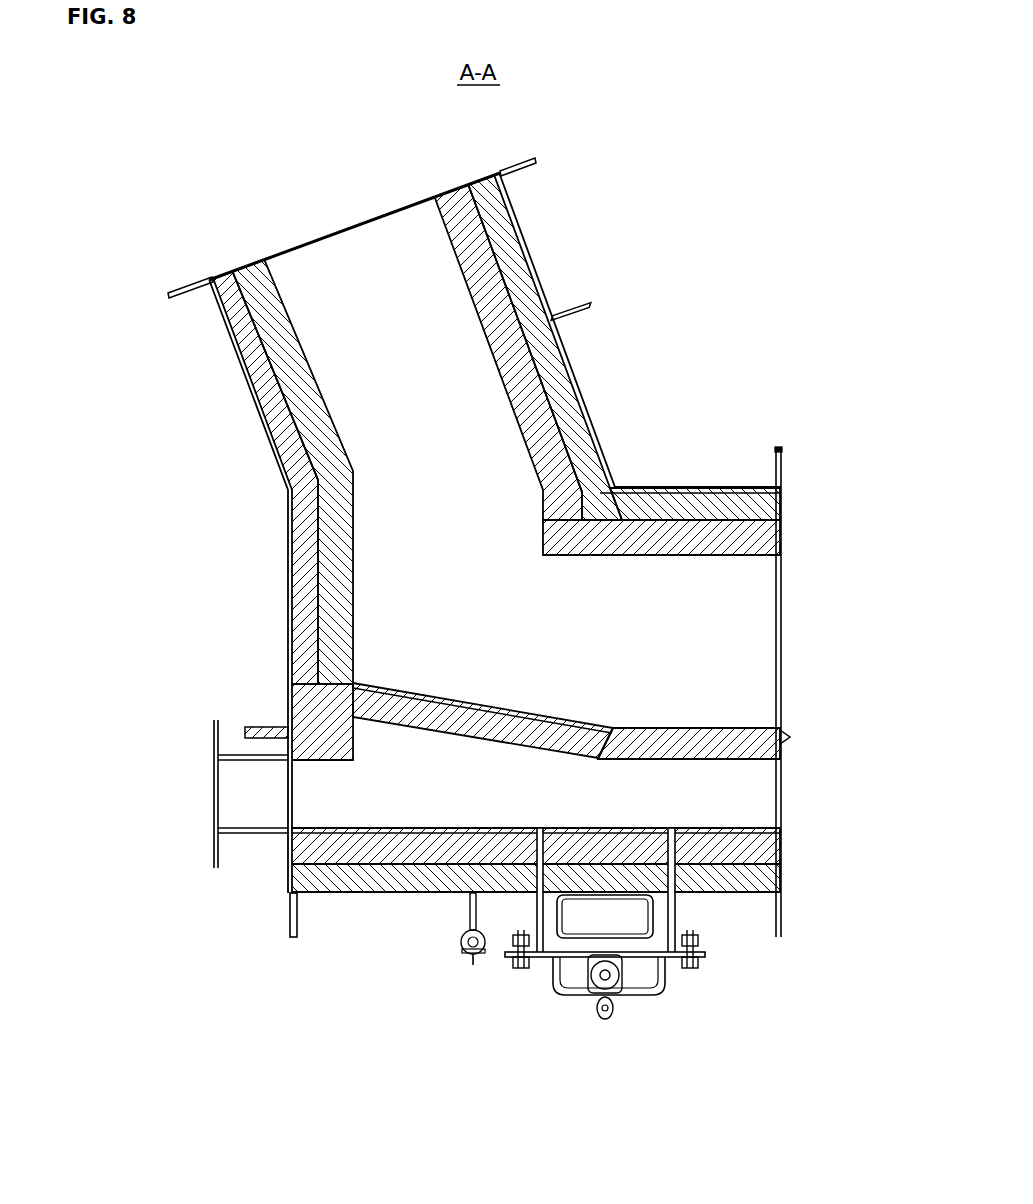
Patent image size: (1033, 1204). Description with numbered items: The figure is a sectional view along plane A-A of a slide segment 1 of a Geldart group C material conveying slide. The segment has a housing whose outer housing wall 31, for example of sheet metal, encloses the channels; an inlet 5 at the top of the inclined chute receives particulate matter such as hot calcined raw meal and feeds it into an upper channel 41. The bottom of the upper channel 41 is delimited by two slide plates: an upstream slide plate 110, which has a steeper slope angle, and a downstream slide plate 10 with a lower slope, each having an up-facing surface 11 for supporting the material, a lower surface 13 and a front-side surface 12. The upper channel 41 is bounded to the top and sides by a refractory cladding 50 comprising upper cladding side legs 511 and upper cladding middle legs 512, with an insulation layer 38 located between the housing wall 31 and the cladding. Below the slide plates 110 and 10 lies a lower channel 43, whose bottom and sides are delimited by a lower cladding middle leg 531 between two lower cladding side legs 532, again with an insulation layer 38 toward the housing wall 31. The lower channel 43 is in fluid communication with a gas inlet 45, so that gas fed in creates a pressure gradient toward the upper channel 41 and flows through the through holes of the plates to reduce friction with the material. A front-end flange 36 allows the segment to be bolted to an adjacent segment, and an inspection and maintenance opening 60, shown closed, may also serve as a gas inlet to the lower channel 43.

The slide segment 1 is at (688, 238).
The inlet 5 is at (340, 218).
The slide plate 10 is at (722, 743).
The up-facing surface 11 is at (477, 696).
The front-side surface 12 is at (788, 742).
The lower surface 13 is at (393, 728).
The housing wall 31 is at (250, 398).
The front-end flange 36 is at (778, 932).
The insulation layer 38 is at (512, 263).
The upper channel 41 is at (553, 627).
The lower channel 43 is at (565, 792).
The gas inlet 45 is at (218, 792).
The refractory cladding 50 is at (337, 554).
The inspection and maintenance opening 60 is at (565, 940).
The slide plate 110 is at (395, 712).
The upper cladding side legs 511 is at (512, 357).
The upper cladding middle legs 512 is at (745, 592).
The lower cladding middle leg 531 is at (431, 855).
The lower cladding side legs 532 is at (378, 790).